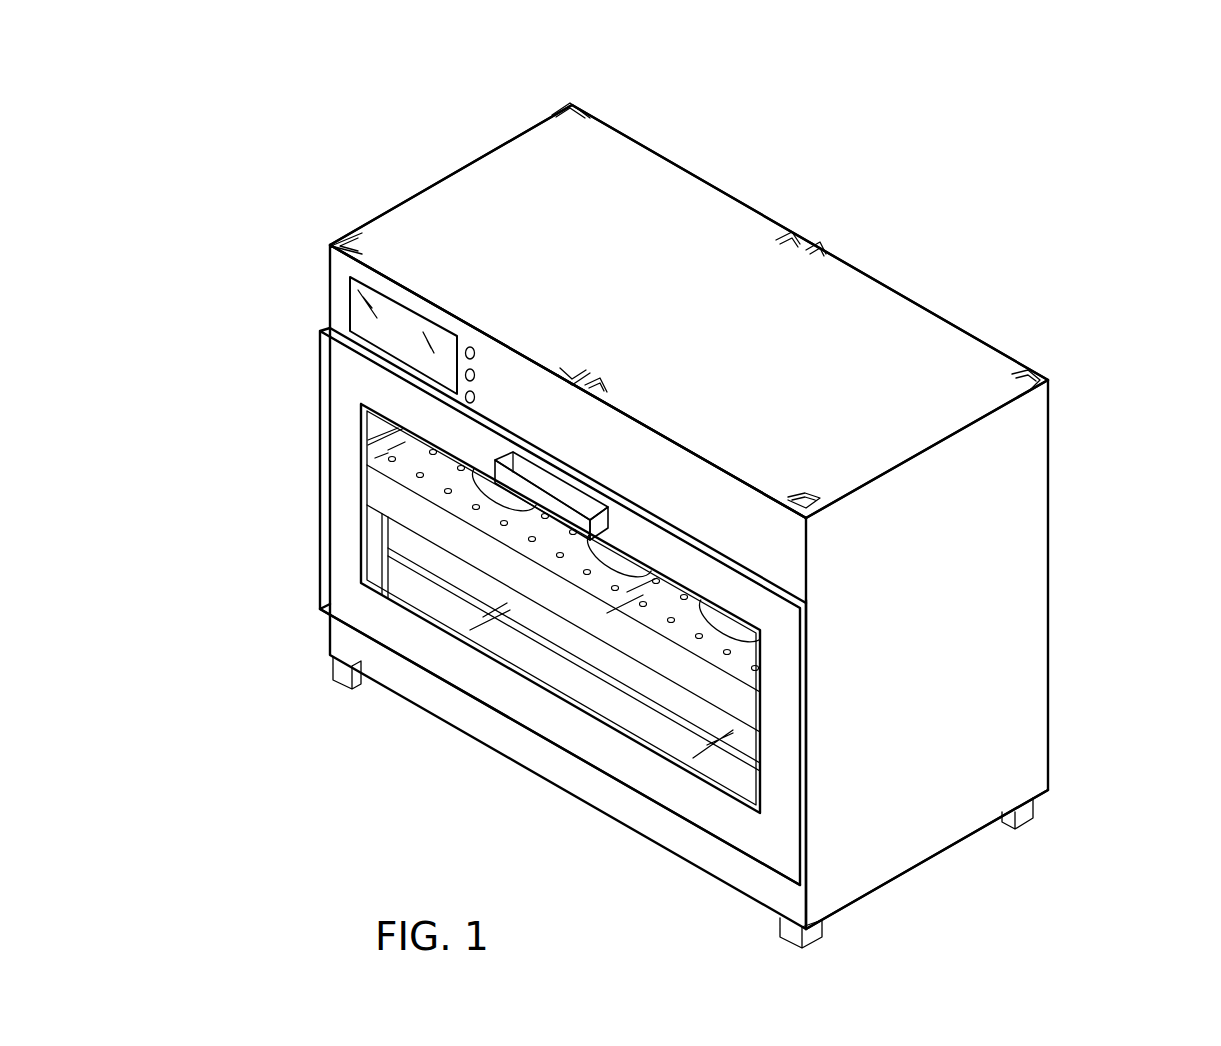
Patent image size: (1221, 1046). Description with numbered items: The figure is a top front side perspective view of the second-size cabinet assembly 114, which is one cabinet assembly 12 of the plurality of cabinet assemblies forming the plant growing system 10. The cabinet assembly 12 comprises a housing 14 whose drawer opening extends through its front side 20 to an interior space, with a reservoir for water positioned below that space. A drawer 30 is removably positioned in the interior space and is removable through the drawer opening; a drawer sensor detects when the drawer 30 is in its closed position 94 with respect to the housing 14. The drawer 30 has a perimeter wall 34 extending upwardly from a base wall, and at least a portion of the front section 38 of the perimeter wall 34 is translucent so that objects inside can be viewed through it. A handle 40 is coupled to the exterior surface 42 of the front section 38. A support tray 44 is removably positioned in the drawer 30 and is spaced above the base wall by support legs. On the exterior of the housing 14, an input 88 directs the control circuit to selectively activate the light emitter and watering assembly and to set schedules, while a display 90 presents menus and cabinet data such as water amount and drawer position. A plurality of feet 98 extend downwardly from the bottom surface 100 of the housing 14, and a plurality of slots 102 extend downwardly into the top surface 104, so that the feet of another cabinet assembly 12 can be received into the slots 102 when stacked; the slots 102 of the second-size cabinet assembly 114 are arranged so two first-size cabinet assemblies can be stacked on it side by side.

The plant growing system 10 is at (984, 122).
The cabinet assembly 12 is at (984, 292).
The housing 14 is at (1010, 493).
The front side 20 is at (574, 780).
The drawer 30 is at (288, 497).
The perimeter wall 34 is at (342, 413).
The front section 38 is at (345, 553).
The handle 40 is at (530, 491).
The exterior surface 42 is at (692, 558).
The support tray 44 is at (558, 590).
The input 88 is at (490, 338).
The display 90 is at (372, 334).
The closed position 94 is at (857, 728).
The feet 98 is at (348, 690).
The bottom surface 100 is at (913, 868).
The slots 102 is at (567, 344).
The top surface 104 is at (683, 200).
The second-size cabinet assembly 114 is at (1098, 354).